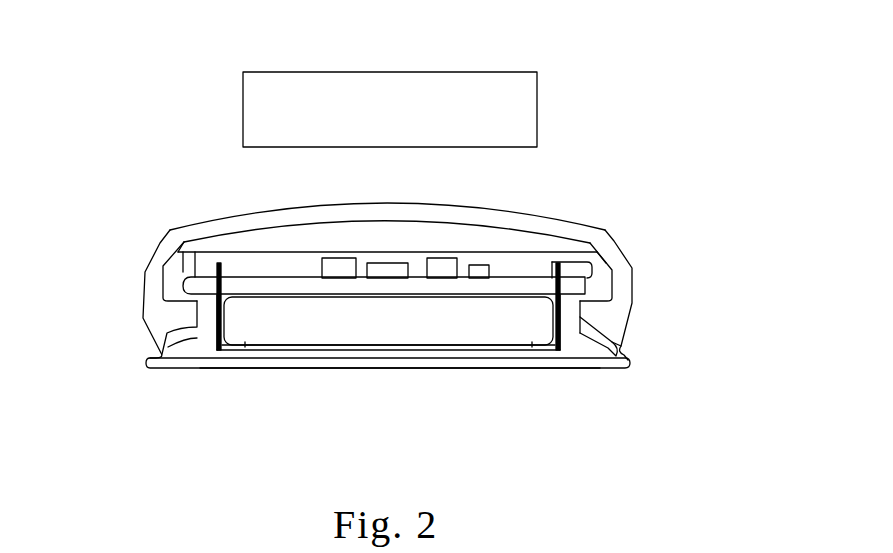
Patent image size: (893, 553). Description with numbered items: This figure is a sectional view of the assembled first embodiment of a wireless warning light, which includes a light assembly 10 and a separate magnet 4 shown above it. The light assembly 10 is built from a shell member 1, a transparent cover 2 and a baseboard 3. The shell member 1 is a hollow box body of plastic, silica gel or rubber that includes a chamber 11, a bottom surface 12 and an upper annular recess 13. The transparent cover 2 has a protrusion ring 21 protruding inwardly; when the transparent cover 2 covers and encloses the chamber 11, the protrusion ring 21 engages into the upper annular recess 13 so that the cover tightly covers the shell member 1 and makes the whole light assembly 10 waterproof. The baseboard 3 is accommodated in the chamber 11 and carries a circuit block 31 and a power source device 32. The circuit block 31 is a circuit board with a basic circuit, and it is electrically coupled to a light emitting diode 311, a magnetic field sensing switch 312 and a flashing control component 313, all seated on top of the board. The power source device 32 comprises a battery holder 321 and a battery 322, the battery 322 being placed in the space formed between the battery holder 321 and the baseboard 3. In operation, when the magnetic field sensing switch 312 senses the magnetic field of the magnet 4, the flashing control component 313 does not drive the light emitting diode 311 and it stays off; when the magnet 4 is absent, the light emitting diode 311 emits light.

The light assembly 10 is at (200, 110).
The shell member 1 is at (586, 360).
The chamber 11 is at (567, 271).
The bottom surface 12 is at (530, 367).
The upper annular recess 13 is at (580, 319).
The transparent cover 2 is at (605, 228).
The protrusion ring 21 is at (598, 312).
The baseboard 3 is at (190, 283).
The circuit block 31 is at (288, 277).
The light emitting diode 311 is at (373, 265).
The magnetic field sensing switch 312 is at (327, 262).
The flashing control component 313 is at (485, 268).
The power source device 32 is at (212, 319).
The battery holder 321 is at (260, 348).
The battery 322 is at (320, 331).
The magnet 4 is at (524, 95).